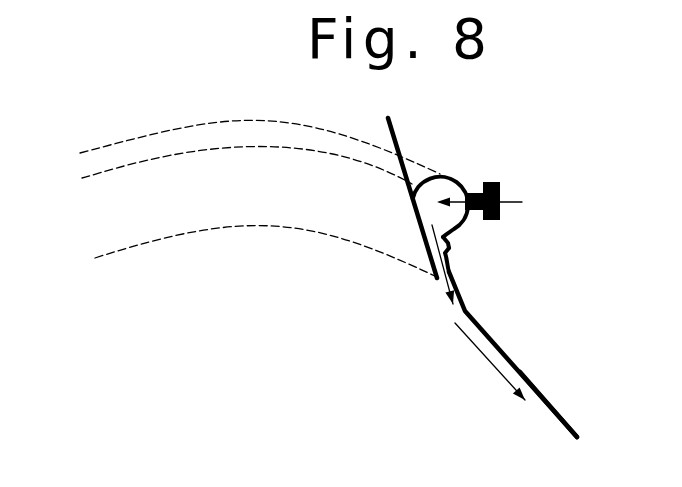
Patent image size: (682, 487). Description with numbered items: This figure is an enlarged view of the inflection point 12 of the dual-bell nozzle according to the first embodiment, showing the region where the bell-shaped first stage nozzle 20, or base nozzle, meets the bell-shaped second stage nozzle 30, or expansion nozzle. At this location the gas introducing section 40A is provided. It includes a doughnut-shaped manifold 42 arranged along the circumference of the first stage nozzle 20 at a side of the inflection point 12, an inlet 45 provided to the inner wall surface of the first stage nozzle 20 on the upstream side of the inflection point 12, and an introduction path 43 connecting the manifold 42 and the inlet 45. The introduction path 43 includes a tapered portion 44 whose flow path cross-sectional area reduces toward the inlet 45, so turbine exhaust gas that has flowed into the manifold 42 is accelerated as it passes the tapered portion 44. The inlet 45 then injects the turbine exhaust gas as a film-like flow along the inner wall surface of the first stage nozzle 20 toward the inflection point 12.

The inflection point 12 is at (467, 313).
The first stage nozzle 20 is at (403, 164).
The second stage nozzle 30 is at (567, 423).
The gas introducing section 40A is at (594, 203).
The manifold 42 is at (455, 177).
The introduction path 43 is at (448, 243).
The tapered portion 44 is at (449, 256).
The inlet 45 is at (435, 286).